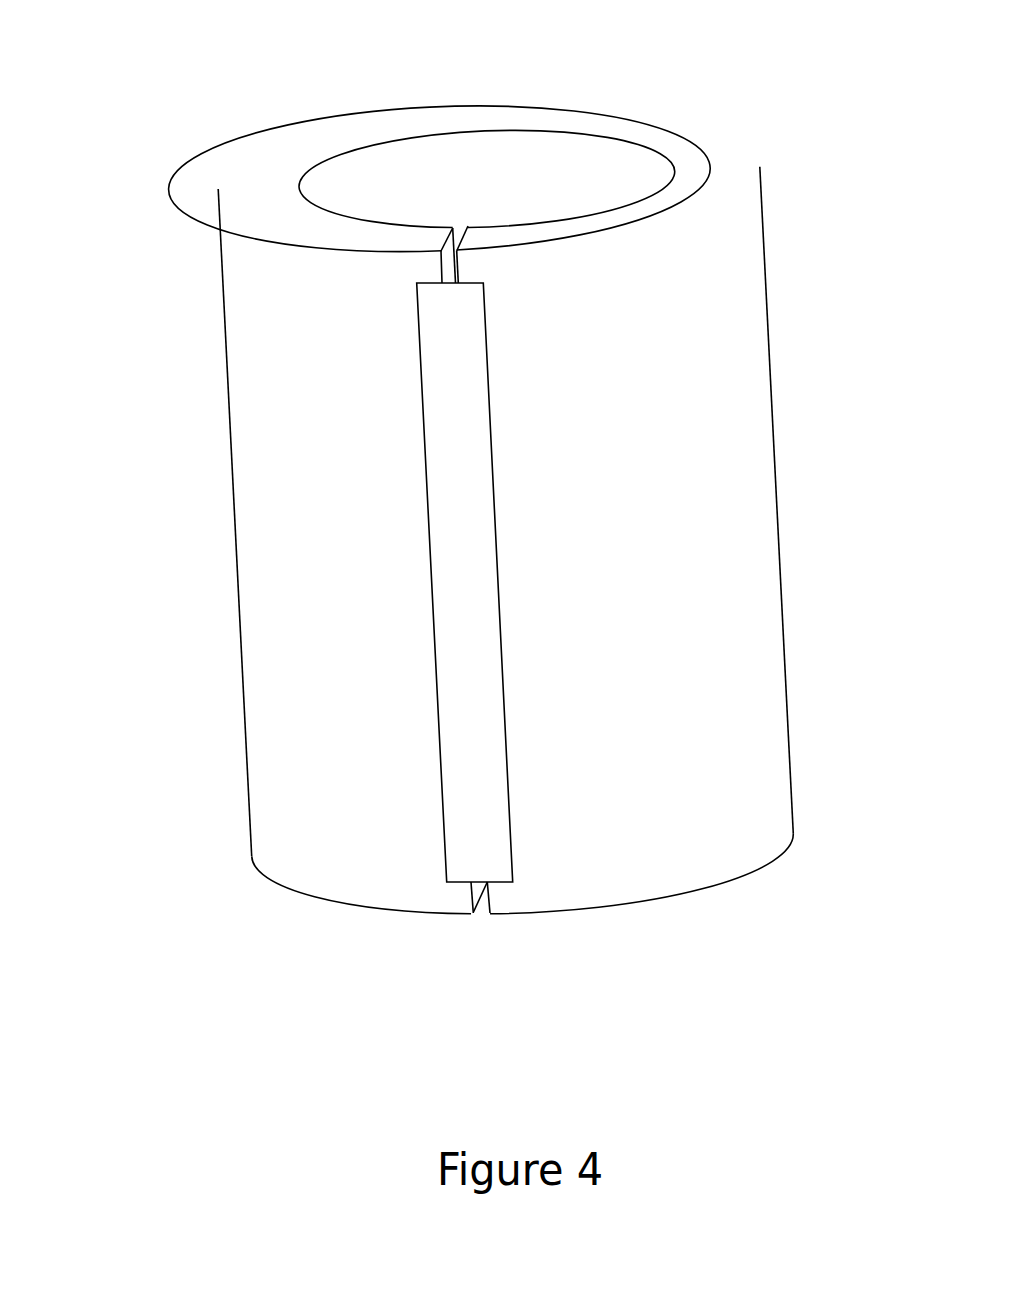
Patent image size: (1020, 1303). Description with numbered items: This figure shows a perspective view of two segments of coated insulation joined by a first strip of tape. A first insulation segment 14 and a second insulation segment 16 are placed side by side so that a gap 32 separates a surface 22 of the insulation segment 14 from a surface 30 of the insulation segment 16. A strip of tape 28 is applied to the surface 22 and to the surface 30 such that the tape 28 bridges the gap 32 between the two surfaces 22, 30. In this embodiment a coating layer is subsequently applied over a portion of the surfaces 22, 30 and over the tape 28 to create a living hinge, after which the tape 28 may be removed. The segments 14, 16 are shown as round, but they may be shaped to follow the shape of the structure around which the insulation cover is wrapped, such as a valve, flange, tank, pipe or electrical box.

The insulation segment 14 is at (793, 362).
The insulation segment 16 is at (184, 353).
The surface 22 is at (660, 718).
The strip of tape 28 is at (458, 542).
The surface 30 is at (325, 712).
The gap 32 is at (459, 224).